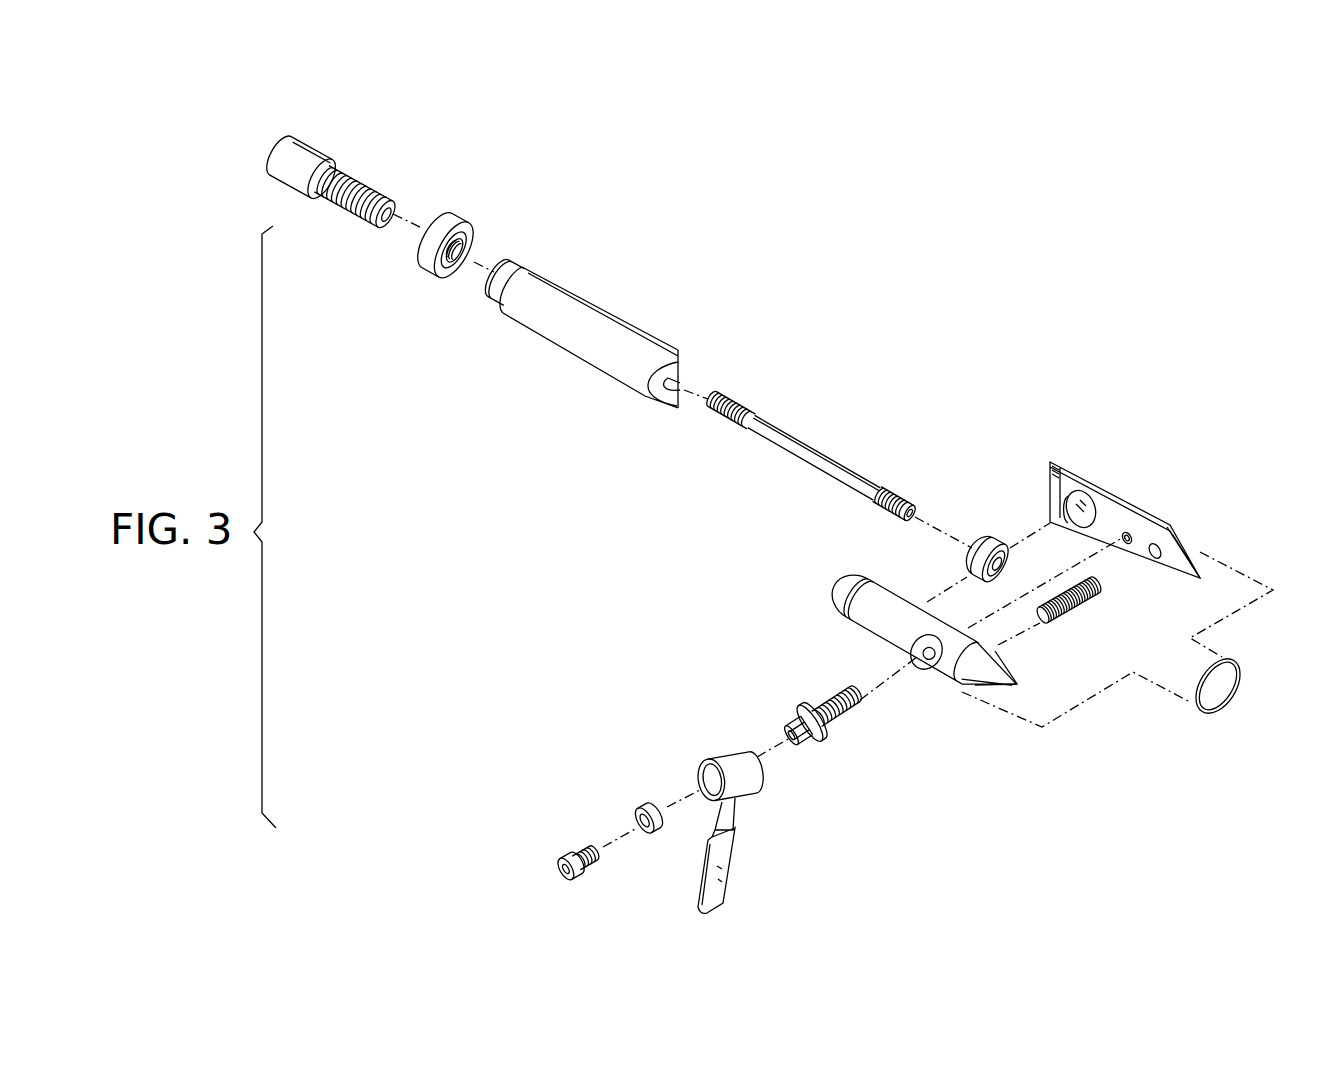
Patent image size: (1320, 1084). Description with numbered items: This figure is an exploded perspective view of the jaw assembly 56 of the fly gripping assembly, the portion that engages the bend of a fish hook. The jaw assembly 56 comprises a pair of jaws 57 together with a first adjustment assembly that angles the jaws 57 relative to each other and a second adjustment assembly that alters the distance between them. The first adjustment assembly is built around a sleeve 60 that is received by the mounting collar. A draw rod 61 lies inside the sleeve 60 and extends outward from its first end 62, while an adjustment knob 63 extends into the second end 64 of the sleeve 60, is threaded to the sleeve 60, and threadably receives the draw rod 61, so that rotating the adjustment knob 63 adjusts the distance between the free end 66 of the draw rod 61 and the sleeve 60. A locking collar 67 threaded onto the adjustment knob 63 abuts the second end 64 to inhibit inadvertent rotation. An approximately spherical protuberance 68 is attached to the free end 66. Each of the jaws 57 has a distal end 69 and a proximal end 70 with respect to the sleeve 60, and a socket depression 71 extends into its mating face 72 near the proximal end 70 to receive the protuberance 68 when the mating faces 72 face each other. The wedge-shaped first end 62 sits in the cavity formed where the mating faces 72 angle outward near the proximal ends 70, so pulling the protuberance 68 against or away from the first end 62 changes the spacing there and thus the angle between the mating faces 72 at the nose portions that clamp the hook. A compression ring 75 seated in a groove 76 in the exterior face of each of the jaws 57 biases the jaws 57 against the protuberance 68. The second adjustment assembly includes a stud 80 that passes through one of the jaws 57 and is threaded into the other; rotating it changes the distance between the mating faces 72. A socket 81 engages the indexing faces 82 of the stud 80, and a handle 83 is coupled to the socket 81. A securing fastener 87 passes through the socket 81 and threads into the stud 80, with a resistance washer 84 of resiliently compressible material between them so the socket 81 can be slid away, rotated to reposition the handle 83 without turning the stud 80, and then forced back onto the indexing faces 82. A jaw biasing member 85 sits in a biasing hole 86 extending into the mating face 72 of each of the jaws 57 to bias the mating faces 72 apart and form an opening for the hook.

The jaw assembly 56 is at (902, 247).
The jaws 57 is at (932, 672).
The sleeve 60 is at (588, 298).
The draw rod 61 is at (813, 447).
The first end 62 is at (658, 396).
The adjustment knob 63 is at (322, 148).
The second end 64 is at (493, 300).
The free end 66 is at (912, 508).
The locking collar 67 is at (447, 218).
The protuberance 68 is at (972, 563).
The distal end 69 is at (1020, 687).
The proximal end 70 is at (842, 585).
The socket depression 71 is at (1062, 512).
The mating face 72 is at (1100, 522).
The compression ring 75 is at (1240, 668).
The groove 76 is at (853, 618).
The stud 80 is at (840, 698).
The socket 81 is at (722, 752).
The indexing faces 82 is at (818, 740).
The handle 83 is at (735, 875).
The resistance washer 84 is at (650, 806).
The jaw biasing member 85 is at (1083, 610).
The biasing hole 86 is at (1157, 560).
The securing fastener 87 is at (570, 850).